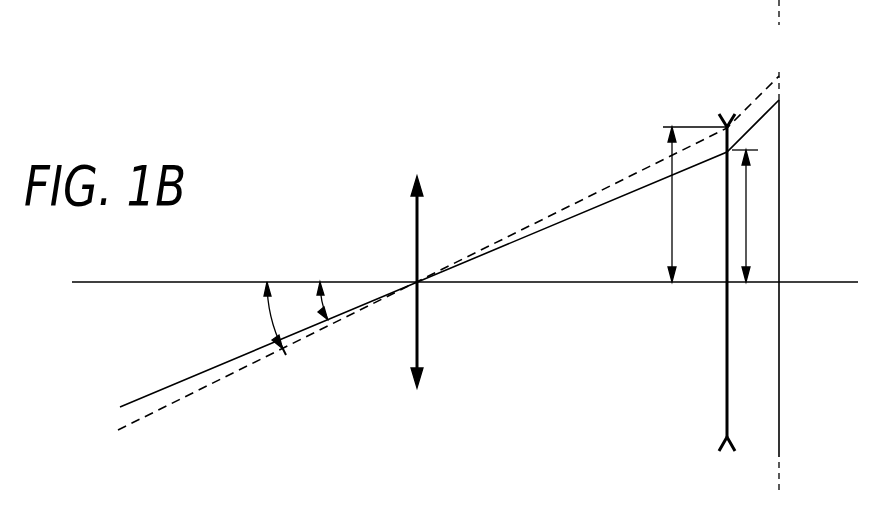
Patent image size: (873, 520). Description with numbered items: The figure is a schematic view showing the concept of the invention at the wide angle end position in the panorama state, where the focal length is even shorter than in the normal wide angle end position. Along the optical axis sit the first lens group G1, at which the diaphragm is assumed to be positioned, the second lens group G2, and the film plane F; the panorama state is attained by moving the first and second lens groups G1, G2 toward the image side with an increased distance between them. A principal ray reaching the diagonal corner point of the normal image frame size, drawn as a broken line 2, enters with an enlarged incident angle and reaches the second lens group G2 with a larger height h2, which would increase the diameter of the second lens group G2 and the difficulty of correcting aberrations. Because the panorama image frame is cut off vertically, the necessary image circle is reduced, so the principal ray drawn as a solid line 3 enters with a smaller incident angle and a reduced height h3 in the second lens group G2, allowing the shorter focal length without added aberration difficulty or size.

The broken line 2 is at (440, 263).
The solid line 3 is at (440, 261).
The first lens group G1 is at (397, 0).
The second lens group G2 is at (694, 0).
The film plane F is at (789, 245).
The height of principal ray in second group h2 is at (695, 204).
The height of principal ray in second group h3 is at (754, 216).